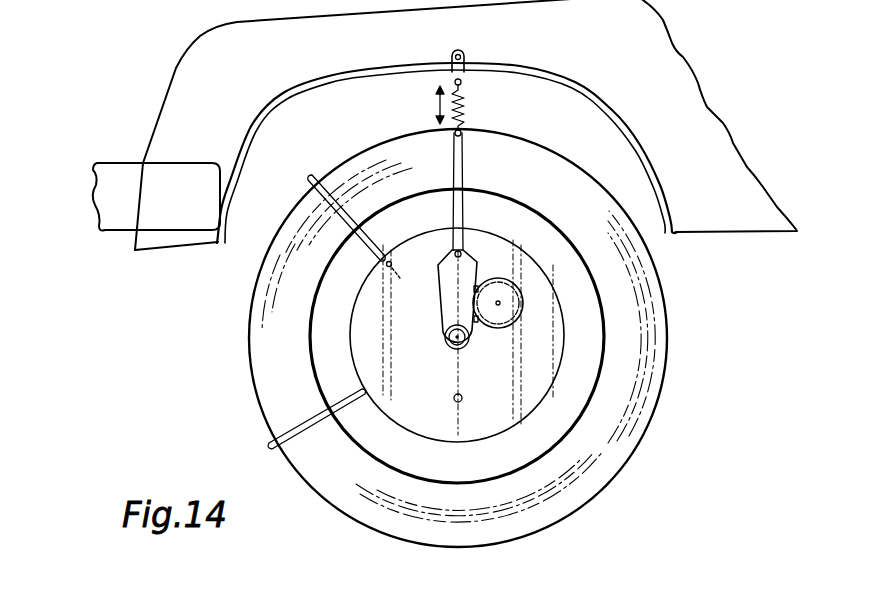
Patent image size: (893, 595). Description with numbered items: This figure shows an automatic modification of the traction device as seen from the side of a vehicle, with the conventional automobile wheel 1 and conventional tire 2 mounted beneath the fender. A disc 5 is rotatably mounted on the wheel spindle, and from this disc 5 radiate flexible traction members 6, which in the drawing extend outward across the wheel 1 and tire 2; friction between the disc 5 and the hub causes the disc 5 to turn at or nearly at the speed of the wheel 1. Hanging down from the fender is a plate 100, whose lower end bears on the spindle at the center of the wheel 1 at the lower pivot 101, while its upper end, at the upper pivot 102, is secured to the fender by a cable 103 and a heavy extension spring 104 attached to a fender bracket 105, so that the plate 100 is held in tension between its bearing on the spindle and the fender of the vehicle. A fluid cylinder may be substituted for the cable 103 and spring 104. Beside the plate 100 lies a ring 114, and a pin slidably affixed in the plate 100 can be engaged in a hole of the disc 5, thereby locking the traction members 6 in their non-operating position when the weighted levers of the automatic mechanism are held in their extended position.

The automobile wheel 1 is at (580, 420).
The tire 2 is at (670, 363).
The disc 5 is at (556, 292).
The flexible traction members 6 is at (310, 175).
The plate 100 is at (446, 288).
The lever pivot 101 is at (446, 337).
The rod pivot 102 is at (455, 251).
The cable 103 is at (463, 184).
The heavy extension spring 104 is at (462, 97).
The fender bracket 105 is at (462, 52).
The roller 114 is at (488, 326).